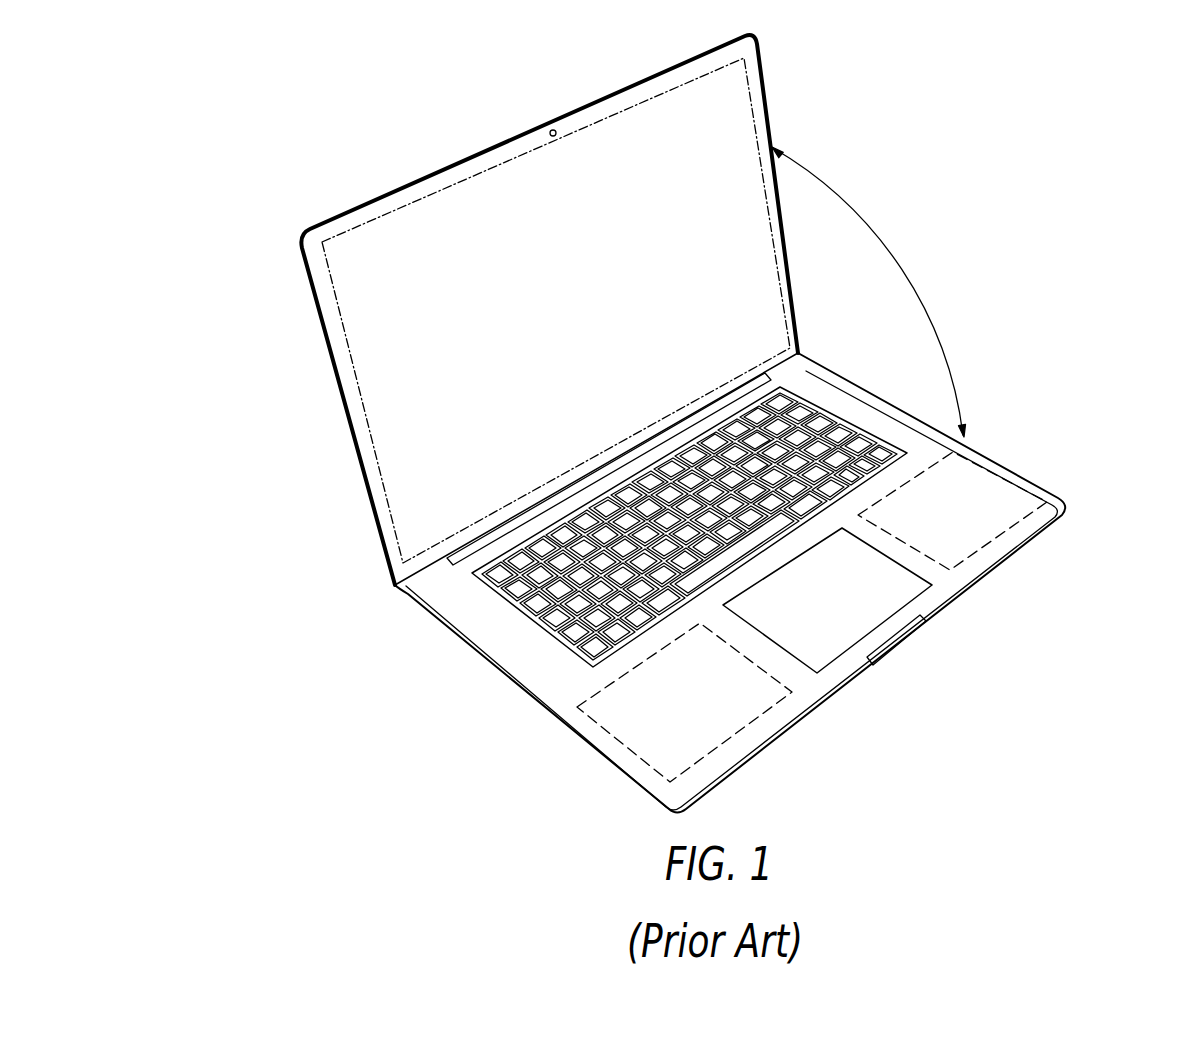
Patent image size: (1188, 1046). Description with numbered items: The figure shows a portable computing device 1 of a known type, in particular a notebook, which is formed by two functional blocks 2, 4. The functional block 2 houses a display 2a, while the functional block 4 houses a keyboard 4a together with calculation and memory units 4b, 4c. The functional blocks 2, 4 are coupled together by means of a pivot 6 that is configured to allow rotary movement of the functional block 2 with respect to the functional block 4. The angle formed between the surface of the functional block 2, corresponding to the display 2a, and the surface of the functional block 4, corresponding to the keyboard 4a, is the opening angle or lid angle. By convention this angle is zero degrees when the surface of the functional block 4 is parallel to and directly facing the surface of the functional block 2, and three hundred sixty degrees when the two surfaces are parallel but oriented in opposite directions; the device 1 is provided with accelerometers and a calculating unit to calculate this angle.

The portable computing device 1 is at (703, 429).
The functional block 2 is at (520, 310).
The display 2a is at (562, 228).
The functional block 4 is at (761, 588).
The keyboard 4a is at (898, 472).
The calculation unit 4b is at (657, 738).
The memory unit 4c is at (1020, 497).
The pivot 6 is at (517, 526).